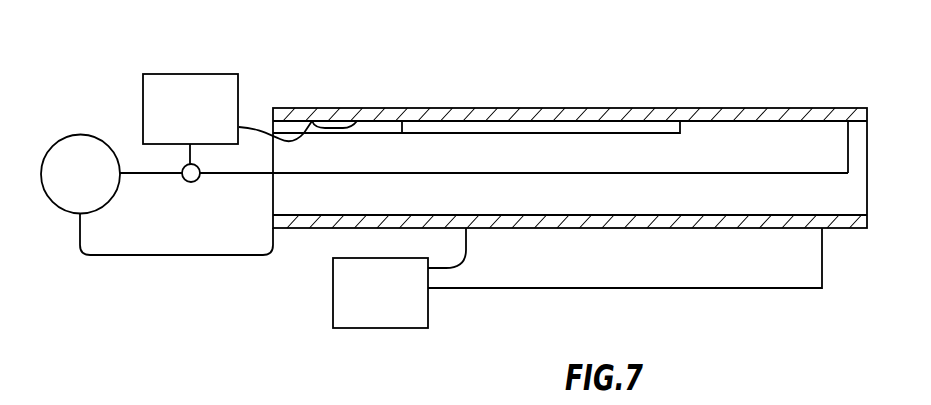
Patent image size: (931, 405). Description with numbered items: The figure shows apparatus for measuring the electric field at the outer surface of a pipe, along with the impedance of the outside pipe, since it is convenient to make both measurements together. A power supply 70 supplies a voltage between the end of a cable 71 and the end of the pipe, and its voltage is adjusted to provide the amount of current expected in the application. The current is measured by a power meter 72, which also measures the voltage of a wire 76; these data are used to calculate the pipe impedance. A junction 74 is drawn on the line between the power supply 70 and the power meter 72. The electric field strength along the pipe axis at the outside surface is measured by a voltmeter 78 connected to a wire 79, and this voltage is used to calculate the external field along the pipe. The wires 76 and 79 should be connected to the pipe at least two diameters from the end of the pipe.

The power supply 70 is at (92, 188).
The cable 71 is at (735, 170).
The power meter 72 is at (167, 73).
The junction 74 is at (183, 187).
The wire 76 is at (365, 112).
The voltmeter 78 is at (428, 312).
The wire 79 is at (669, 290).